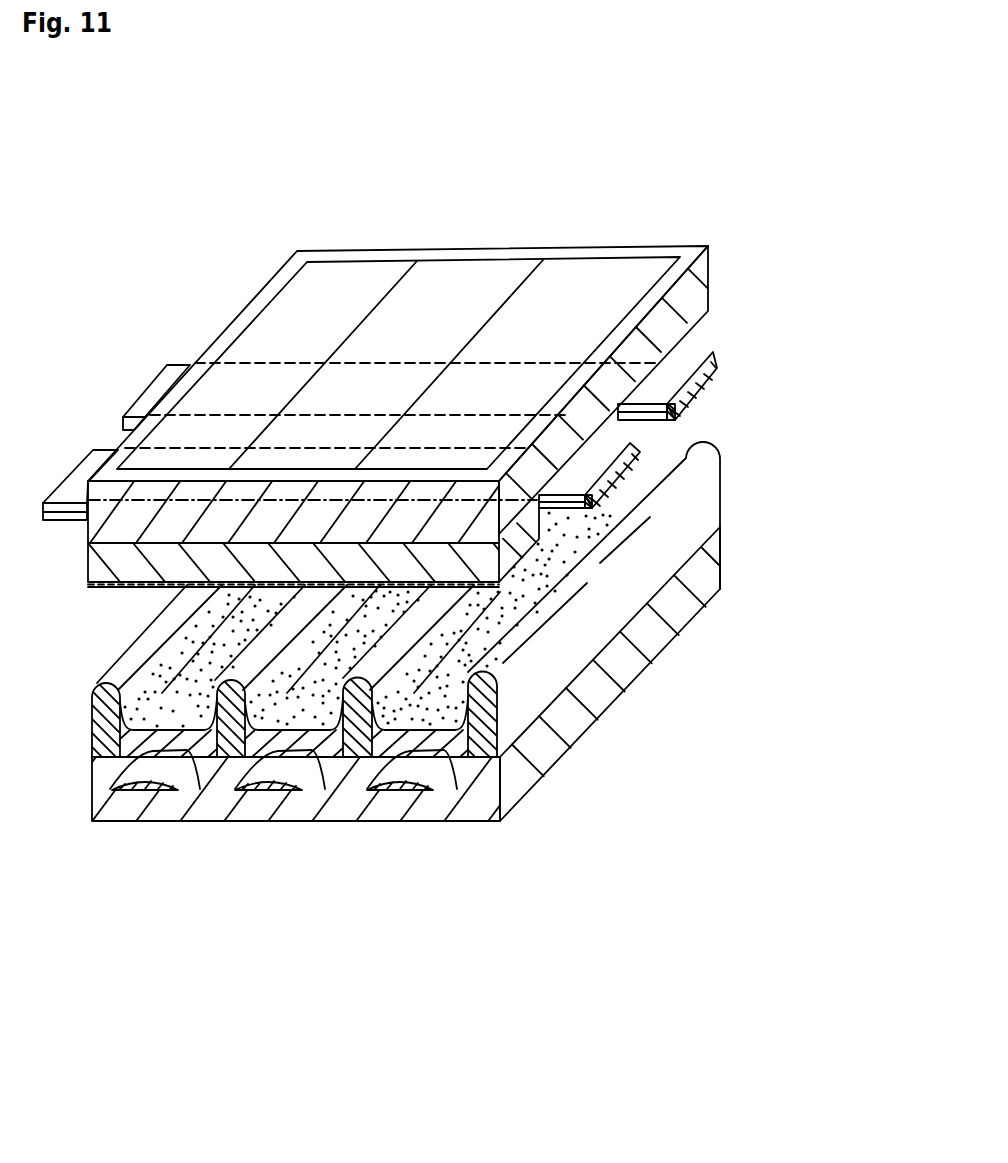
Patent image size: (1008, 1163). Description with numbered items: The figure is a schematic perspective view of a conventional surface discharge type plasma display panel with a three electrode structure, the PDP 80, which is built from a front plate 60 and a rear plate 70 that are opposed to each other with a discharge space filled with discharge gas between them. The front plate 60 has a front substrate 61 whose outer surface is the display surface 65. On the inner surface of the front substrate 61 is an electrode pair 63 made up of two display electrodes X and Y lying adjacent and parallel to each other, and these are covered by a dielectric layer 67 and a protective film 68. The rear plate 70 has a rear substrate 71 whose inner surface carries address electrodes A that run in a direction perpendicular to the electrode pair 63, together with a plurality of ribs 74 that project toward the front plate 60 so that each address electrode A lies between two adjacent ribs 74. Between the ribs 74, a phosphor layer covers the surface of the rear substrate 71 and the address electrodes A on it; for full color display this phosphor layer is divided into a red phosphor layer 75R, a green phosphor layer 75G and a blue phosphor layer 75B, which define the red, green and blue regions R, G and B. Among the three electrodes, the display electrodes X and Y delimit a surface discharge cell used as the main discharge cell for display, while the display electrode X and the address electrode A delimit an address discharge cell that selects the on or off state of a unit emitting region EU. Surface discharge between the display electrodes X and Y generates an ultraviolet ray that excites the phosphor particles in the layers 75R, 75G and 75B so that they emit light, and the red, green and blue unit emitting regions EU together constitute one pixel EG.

The front plate 60 is at (437, 384).
The front substrate 61 is at (698, 292).
The electrode pair 63 is at (110, 322).
The display electrode X is at (141, 387).
The display electrode Y is at (92, 446).
The display surface 65 is at (289, 319).
The dielectric layer 67 is at (103, 572).
The protective film 68 is at (120, 589).
The pixel EG is at (627, 183).
The unit emitting region EU is at (598, 273).
The rear plate 70 is at (448, 677).
The rear substrate 71 is at (550, 735).
The rib 74 is at (585, 642).
The red phosphor layer 75R is at (205, 745).
The green phosphor layer 75G is at (338, 748).
The blue phosphor layer 75B is at (461, 750).
The address electrode A is at (390, 793).
The red unit emitting region R is at (149, 714).
The green unit emitting region G is at (273, 714).
The blue unit emitting region B is at (411, 714).
The PDP 80 is at (439, 559).